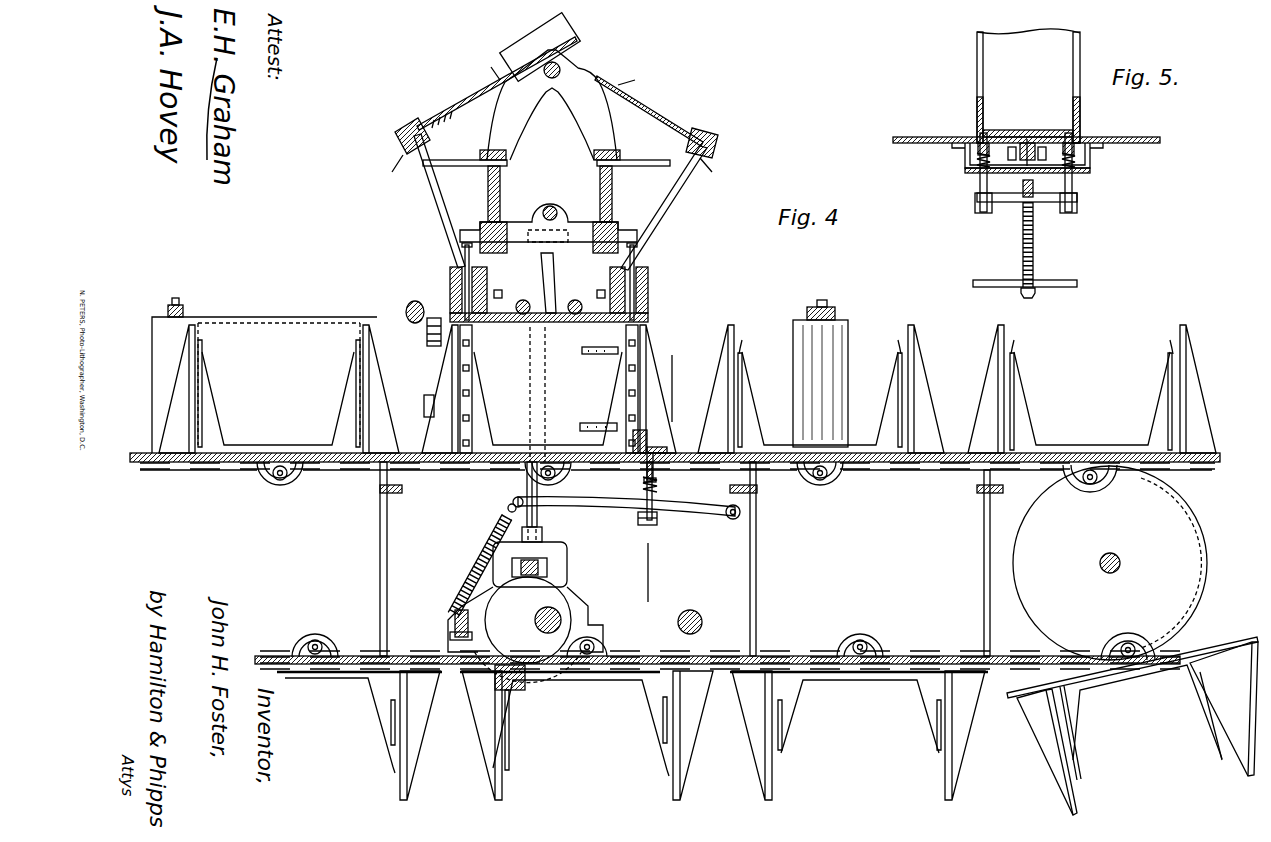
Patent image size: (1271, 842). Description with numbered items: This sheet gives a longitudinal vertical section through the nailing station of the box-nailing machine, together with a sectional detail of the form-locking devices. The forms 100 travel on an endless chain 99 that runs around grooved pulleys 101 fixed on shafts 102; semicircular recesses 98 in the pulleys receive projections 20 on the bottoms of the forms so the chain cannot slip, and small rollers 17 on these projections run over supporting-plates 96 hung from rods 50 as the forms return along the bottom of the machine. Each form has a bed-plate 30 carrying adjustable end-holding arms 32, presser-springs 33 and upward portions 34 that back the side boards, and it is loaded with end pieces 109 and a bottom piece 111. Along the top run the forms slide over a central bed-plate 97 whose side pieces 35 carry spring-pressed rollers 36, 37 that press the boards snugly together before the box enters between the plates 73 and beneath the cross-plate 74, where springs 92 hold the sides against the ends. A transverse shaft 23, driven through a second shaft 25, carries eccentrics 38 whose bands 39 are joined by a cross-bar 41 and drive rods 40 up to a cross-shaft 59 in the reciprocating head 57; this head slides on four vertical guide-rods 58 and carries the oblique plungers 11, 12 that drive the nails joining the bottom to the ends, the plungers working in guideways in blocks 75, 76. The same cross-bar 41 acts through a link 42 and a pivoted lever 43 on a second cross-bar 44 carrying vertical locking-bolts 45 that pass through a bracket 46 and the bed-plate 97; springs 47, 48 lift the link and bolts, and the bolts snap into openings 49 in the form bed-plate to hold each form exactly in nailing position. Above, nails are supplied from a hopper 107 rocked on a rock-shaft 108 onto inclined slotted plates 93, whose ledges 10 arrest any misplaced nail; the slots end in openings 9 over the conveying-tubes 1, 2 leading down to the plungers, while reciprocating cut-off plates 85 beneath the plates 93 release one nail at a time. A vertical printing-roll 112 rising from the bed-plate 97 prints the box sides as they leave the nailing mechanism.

In FIG. 4, the conveying-tubes 1 is at (443, 214).
In FIG. 4, the conveying-tubes 2 is at (660, 217).
In FIG. 4, the openings 9 is at (398, 132).
In FIG. 4, the ledge 10 is at (560, 68).
In FIG. 4, the plungers 11 is at (462, 262).
In FIG. 4, the plungers 12 is at (636, 262).
In FIG. 4, the small rollers 17 is at (282, 480).
In FIG. 5, the small rollers 17 is at (1027, 154).
In FIG. 4, the projections 20 is at (706, 561).
In FIG. 4, the transverse shaft 23 is at (542, 611).
In FIG. 4, the second transverse shaft 25 is at (683, 588).
In FIG. 4, the bed-plate 30 is at (1192, 453).
In FIG. 5, the bed-plate 30 is at (1080, 137).
In FIG. 4, the arms 32 is at (708, 570).
In FIG. 5, the arms 32 is at (1028, 86).
In FIG. 4, the presser-springs 33 is at (386, 764).
In FIG. 4, the portions 34 is at (710, 560).
In FIG. 4, the side pieces 35 is at (152, 352).
In FIG. 4, the spring-pressed roller 36 is at (427, 346).
In FIG. 4, the spring-pressed roller 37 is at (406, 310).
In FIG. 4, the eccentrics 38 is at (525, 633).
In FIG. 4, the eccentric-bands 39 is at (562, 567).
In FIG. 4, the rods 40 is at (553, 284).
In FIG. 4, the cross-bar 41 is at (453, 604).
In FIG. 5, the cross-bar 41 is at (1070, 282).
In FIG. 4, the link 42 is at (506, 510).
In FIG. 5, the link 42 is at (1034, 262).
In FIG. 4, the pivoted lever 43 is at (690, 512).
In FIG. 5, the pivoted lever 43 is at (1034, 189).
In FIG. 4, the second cross-bar 44 is at (655, 524).
In FIG. 5, the second cross-bar 44 is at (1009, 203).
In FIG. 4, the locking-bolts 45 is at (653, 496).
In FIG. 5, the locking-bolts 45 is at (1082, 185).
In FIG. 5, the bracket 46 is at (1092, 171).
In FIG. 4, the spring 47 is at (492, 543).
In FIG. 5, the spring 47 is at (1034, 238).
In FIG. 4, the springs 48 is at (658, 482).
In FIG. 5, the springs 48 is at (975, 161).
In FIG. 4, the openings 49 is at (655, 425).
In FIG. 5, the openings 49 is at (990, 140).
In FIG. 4, the rods 50 is at (691, 559).
In FIG. 4, the reciprocating head 57 is at (548, 228).
In FIG. 4, the vertical guide-rods 58 is at (557, 186).
In FIG. 4, the cross-shaft 59 is at (556, 207).
In FIG. 4, the plates 73 is at (548, 398).
In FIG. 4, the cross-plate 74 is at (549, 389).
In FIG. 4, the block 75 is at (450, 290).
In FIG. 4, the block 76 is at (648, 290).
In FIG. 4, the cut-off plates 85 is at (557, 140).
In FIG. 4, the springs 92 is at (585, 354).
In FIG. 4, the inclined plates 93 is at (478, 104).
In FIG. 4, the supporting-plates 96 is at (956, 656).
In FIG. 4, the bed-plate 97 is at (410, 453).
In FIG. 5, the bed-plate 97 is at (1120, 137).
In FIG. 4, the semicircular recesses 98 is at (1110, 486).
In FIG. 4, the chain 99 is at (218, 462).
In FIG. 4, the forms 100 is at (345, 756).
In FIG. 4, the grooved pulleys 101 is at (1110, 563).
In FIG. 4, the shafts 102 is at (1121, 565).
In FIG. 4, the hopper 107 is at (540, 47).
In FIG. 4, the rock-shaft 108 is at (552, 79).
In FIG. 4, the end pieces 109 is at (279, 384).
In FIG. 4, the bottom piece 111 is at (283, 323).
In FIG. 4, the printing-rolls 112 is at (832, 373).